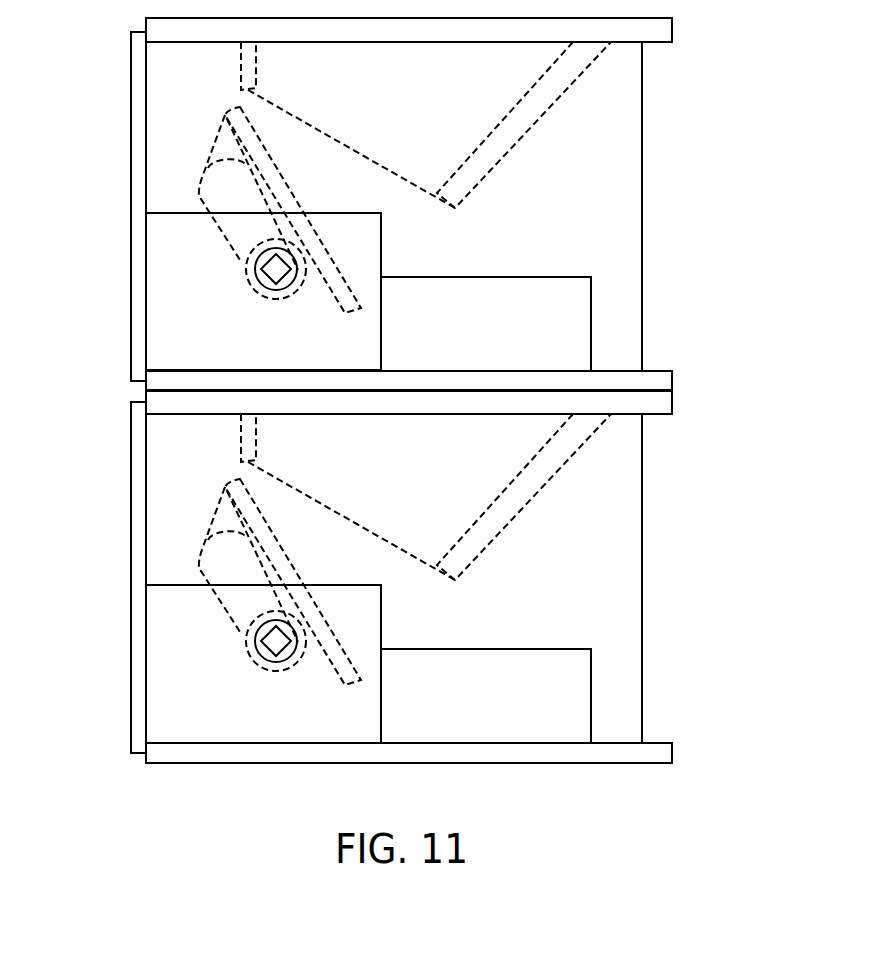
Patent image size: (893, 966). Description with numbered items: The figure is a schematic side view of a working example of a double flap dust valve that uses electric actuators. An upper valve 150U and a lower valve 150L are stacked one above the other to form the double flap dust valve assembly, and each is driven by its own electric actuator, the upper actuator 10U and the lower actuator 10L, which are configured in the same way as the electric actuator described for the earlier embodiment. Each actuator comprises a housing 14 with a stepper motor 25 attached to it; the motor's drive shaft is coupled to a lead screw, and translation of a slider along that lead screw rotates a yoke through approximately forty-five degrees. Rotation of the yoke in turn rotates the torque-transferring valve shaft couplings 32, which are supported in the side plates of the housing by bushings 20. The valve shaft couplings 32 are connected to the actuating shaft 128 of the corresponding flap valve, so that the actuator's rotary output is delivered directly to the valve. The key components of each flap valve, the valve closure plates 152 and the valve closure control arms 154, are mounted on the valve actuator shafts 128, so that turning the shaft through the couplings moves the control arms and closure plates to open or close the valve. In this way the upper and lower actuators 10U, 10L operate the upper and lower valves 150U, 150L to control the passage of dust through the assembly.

The upper actuator 10U is at (166, 353).
The lower actuator 10L is at (166, 725).
The housing 14 is at (168, 312).
The bushings 20 is at (161, 243).
The valve shaft couplings 32 is at (255, 269).
The stepper motor 25 is at (520, 277).
The actuating shaft 128 is at (262, 294).
The upper valve 150U is at (678, 128).
The lower valve 150L is at (678, 479).
The valve closure plates 152 is at (282, 177).
The valve closure control arms 154 is at (208, 207).